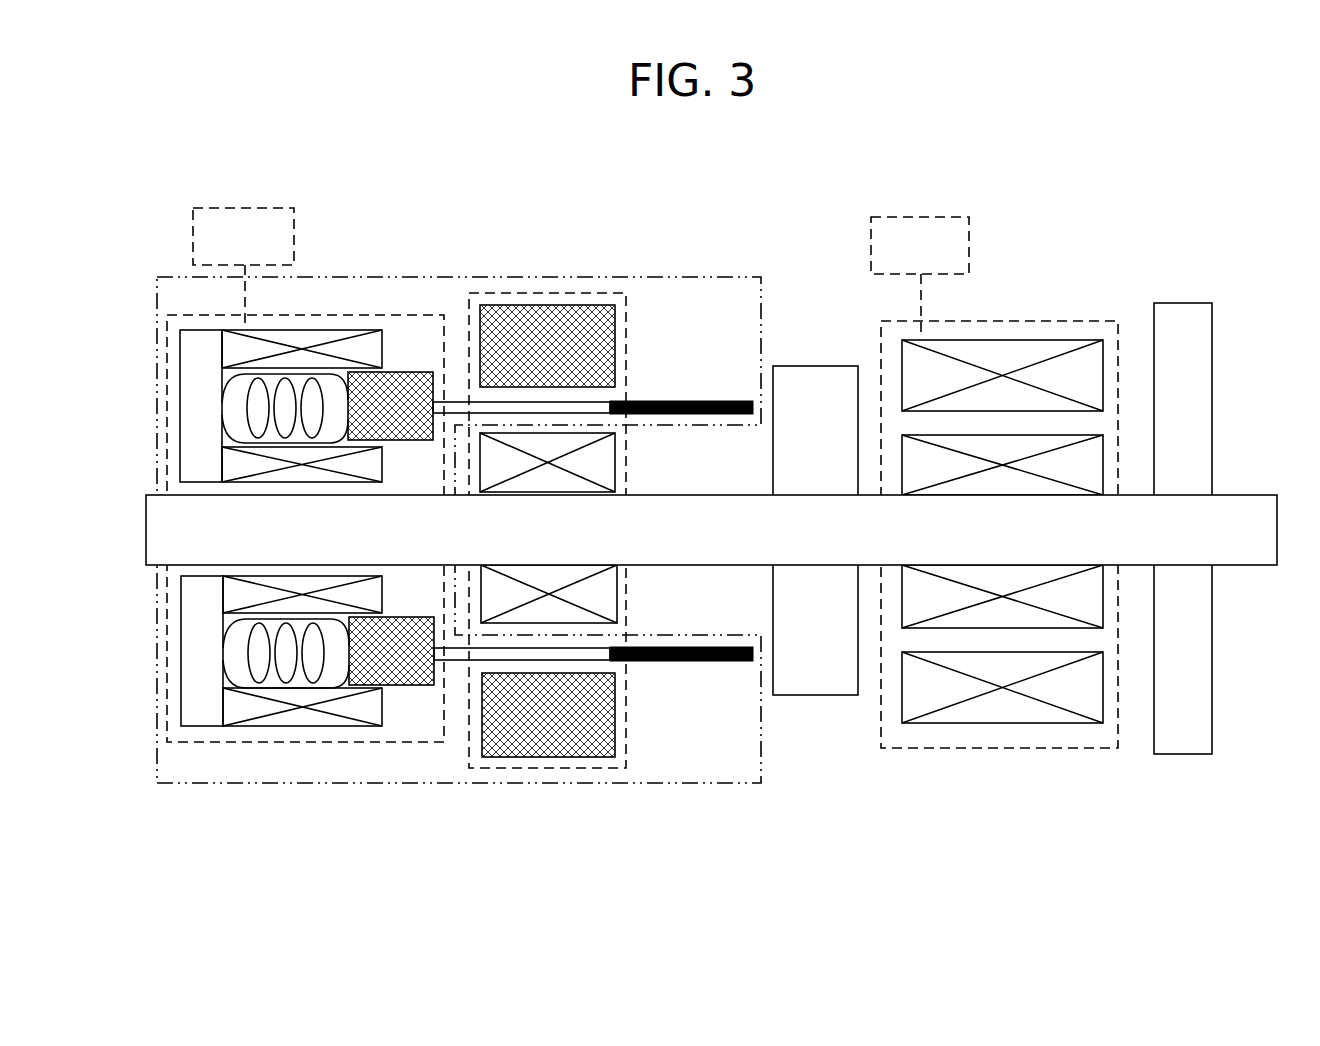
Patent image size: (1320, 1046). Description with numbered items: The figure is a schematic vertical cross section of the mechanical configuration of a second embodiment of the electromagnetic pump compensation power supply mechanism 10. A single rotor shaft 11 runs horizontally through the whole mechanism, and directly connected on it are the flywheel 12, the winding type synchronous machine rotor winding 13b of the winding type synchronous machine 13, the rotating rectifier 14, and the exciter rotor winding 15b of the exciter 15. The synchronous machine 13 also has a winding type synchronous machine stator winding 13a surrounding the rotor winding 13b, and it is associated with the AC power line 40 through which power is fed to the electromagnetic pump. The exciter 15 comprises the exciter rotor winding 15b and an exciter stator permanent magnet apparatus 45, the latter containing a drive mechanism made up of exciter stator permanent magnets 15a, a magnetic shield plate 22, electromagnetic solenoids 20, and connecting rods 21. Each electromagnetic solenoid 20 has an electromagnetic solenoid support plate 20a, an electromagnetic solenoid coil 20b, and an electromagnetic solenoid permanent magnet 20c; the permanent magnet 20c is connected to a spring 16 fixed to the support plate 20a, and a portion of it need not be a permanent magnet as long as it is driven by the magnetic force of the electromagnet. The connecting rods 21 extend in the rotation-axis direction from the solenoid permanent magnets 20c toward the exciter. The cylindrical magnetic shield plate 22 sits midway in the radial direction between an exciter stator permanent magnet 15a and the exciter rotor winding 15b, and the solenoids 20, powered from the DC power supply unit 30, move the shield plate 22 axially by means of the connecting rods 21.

The electromagnetic pump compensation power supply mechanism 10 is at (690, 204).
The rotor shaft 11 is at (1232, 568).
The flywheel 12 is at (1185, 303).
The winding type synchronous machine 13 is at (1080, 321).
The winding type synchronous machine stator winding 13a is at (988, 726).
The winding type synchronous machine rotor winding 13b is at (1105, 620).
The rotating rectifier 14 is at (805, 365).
The exciter 15 is at (563, 291).
The exciter stator permanent magnet 15a is at (575, 758).
The exciter rotor winding 15b is at (622, 591).
The spring 16 is at (315, 681).
The electromagnetic solenoid 20 is at (400, 313).
The electromagnetic solenoid support plate 20a is at (180, 393).
The electromagnetic solenoid coil 20b is at (275, 727).
The electromagnetic solenoid permanent magnet 20c is at (393, 686).
The connecting rod 21 is at (455, 400).
The magnetic shield plate 22 is at (681, 400).
The DC power supply unit 30 is at (294, 233).
The AC power line 40 is at (970, 240).
The exciter stator permanent magnet apparatus 45 is at (158, 272).